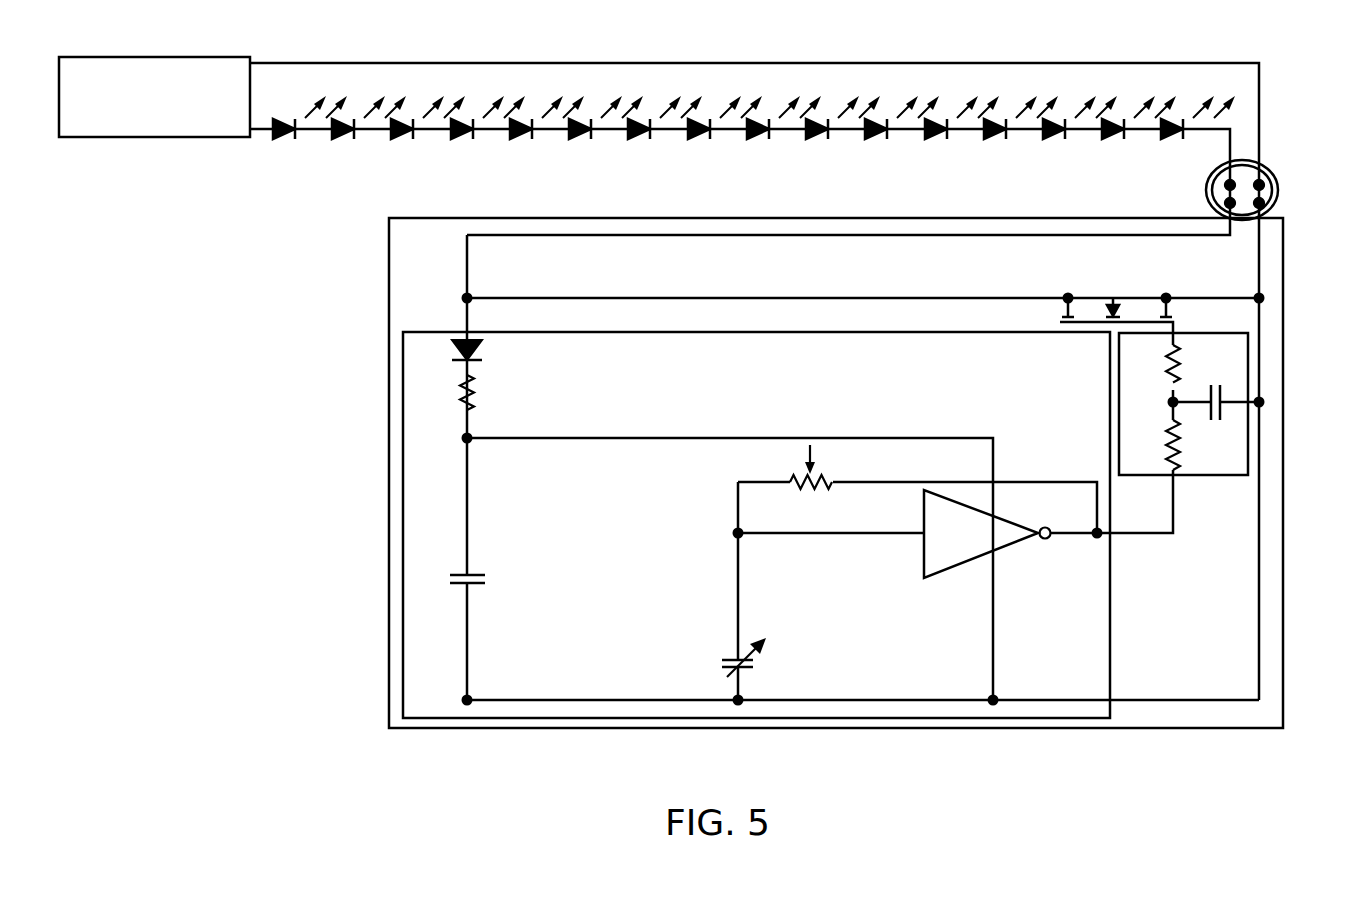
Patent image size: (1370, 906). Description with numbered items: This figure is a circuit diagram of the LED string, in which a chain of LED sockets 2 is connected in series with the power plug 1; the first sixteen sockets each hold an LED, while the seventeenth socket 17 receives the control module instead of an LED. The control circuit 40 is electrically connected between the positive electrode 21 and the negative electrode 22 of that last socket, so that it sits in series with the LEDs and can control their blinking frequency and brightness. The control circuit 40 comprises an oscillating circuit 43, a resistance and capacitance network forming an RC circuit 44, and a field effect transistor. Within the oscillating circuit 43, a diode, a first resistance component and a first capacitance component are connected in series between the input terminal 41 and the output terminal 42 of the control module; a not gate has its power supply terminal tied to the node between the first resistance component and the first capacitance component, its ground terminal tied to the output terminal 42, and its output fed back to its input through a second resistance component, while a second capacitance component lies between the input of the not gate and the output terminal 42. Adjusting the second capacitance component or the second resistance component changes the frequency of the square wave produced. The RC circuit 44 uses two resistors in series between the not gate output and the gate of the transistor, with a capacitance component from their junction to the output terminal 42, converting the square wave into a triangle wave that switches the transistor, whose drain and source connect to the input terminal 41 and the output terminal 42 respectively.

The power plug 1 is at (222, 57).
The LED socket 2 is at (1213, 192).
The LED socket 2-17 (seventeenth LED socket) 17 is at (1186, 205).
The positive electrode 21 is at (1225, 181).
The negative electrode 22 is at (1256, 172).
The control circuit 40 is at (389, 440).
The input terminal 41 is at (1219, 207).
The output terminal 42 is at (1265, 205).
The oscillating circuit 43 is at (810, 332).
The RC circuit 44 is at (1250, 370).